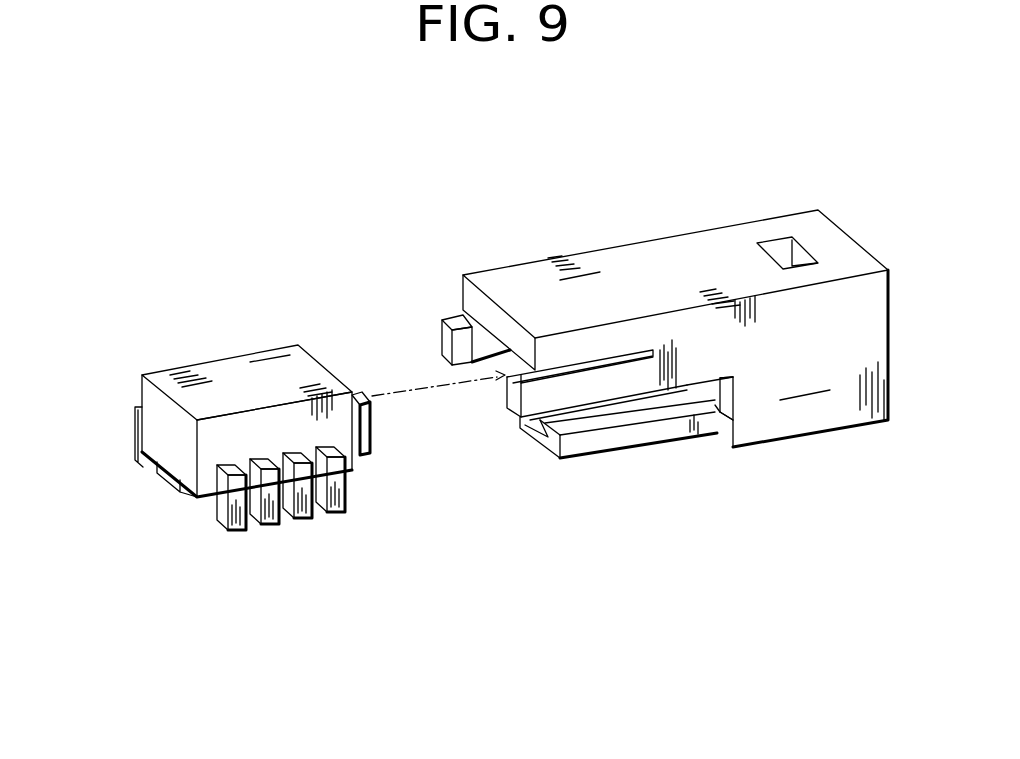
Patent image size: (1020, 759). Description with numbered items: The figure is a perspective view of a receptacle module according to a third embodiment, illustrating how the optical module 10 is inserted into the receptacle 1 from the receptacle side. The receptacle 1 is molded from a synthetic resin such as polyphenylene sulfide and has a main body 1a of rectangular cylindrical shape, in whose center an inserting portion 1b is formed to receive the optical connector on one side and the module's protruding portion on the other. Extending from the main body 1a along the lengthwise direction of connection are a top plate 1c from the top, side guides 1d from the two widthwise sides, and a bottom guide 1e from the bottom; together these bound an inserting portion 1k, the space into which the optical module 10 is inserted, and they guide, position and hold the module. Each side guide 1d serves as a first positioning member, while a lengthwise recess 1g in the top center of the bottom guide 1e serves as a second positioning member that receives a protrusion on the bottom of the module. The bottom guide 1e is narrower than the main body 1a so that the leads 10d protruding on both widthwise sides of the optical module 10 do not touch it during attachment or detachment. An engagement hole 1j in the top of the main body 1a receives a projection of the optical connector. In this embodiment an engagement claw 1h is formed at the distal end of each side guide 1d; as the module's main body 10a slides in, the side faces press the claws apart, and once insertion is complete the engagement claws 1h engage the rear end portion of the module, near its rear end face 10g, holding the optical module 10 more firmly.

The receptacle 1 is at (690, 232).
The main body 1a is at (806, 402).
The inserting portion 1b is at (718, 420).
The top plate 1c is at (612, 280).
The side guide 1d is at (488, 343).
The bottom guide 1e is at (597, 445).
The recess 1g is at (540, 424).
The engagement claw 1h is at (457, 342).
The engagement hole 1j is at (780, 248).
The inserting portion 1k is at (493, 377).
The optical module 10 is at (196, 358).
The main body 10a is at (274, 362).
The leads 10d is at (135, 435).
The rear end face 10g is at (177, 445).